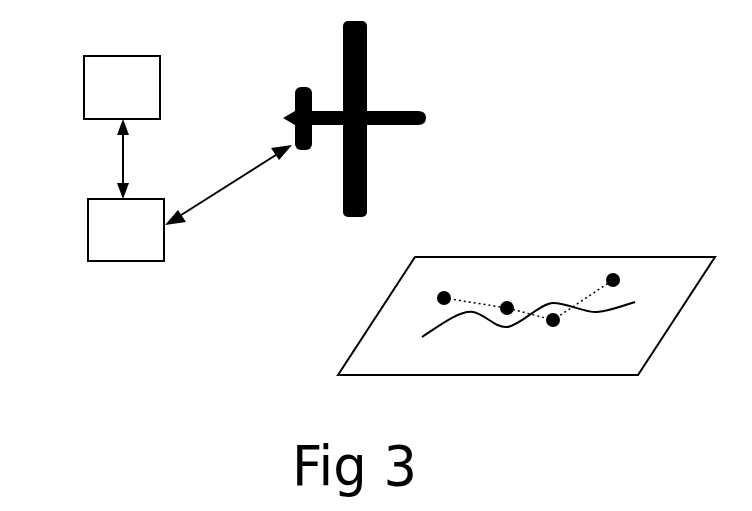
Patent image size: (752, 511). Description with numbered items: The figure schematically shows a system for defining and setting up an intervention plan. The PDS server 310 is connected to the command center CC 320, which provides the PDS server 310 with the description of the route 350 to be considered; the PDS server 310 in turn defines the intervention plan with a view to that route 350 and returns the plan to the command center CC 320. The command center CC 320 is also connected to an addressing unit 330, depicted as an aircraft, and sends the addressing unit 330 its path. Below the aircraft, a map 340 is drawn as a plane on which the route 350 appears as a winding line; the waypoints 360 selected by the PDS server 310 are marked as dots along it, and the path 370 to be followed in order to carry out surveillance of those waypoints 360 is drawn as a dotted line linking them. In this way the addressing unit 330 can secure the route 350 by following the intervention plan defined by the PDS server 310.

The PDS server 310 is at (84, 83).
The command center CC 320 is at (88, 228).
The addressing unit 330 is at (350, 217).
The map 340 is at (357, 343).
The route 350 is at (455, 322).
The waypoints 360 is at (450, 292).
The path 370 is at (590, 300).